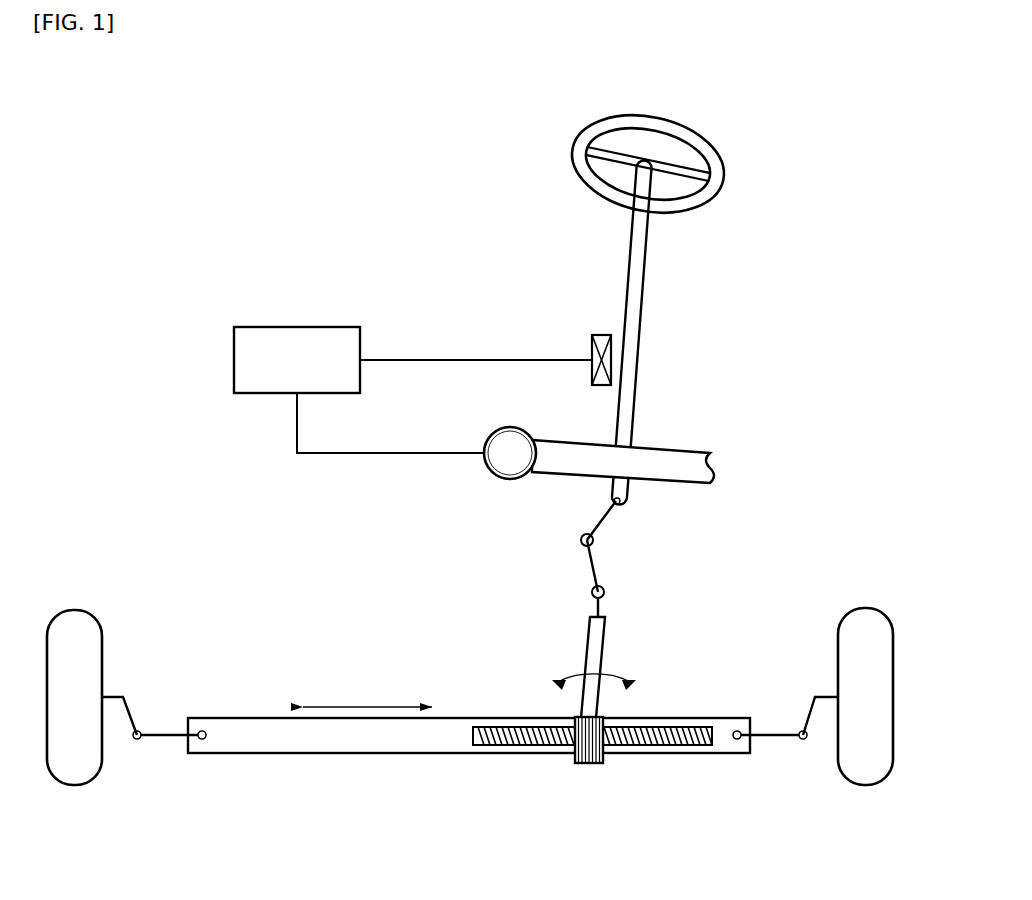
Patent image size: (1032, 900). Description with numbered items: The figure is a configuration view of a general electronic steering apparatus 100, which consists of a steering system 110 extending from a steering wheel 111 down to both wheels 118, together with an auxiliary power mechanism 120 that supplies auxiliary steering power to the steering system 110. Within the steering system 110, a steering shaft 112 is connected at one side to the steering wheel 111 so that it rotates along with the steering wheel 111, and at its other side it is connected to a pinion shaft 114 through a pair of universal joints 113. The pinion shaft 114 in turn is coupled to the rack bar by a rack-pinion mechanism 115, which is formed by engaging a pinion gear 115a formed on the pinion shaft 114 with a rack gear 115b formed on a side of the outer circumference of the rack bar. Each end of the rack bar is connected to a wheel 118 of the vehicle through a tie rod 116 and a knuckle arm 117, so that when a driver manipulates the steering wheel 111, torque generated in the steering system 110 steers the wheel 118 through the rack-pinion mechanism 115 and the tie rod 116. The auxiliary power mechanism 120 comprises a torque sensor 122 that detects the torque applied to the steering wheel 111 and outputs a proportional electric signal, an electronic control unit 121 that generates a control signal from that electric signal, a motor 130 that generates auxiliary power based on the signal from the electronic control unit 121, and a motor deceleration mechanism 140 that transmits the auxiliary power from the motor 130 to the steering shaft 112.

The electronic steering apparatus 100 is at (422, 99).
The steering system 110 is at (335, 208).
The steering wheel 111 is at (569, 150).
The steering shaft 112 is at (645, 290).
The universal joints 113 is at (603, 523).
The pinion shaft 114 is at (592, 642).
The rack-pinion mechanism 115 is at (469, 795).
The pinion gear 115a is at (590, 743).
The rack gear 115b is at (645, 737).
The tie rod 116 is at (772, 733).
The knuckle arm 117 is at (112, 693).
The wheel 118 is at (865, 608).
The auxiliary power mechanism 120 is at (152, 286).
The electronic control unit (ECU) 121 is at (234, 358).
The torque sensor 122 is at (592, 348).
The motor 130 is at (507, 462).
The motor deceleration mechanism 140 is at (645, 447).